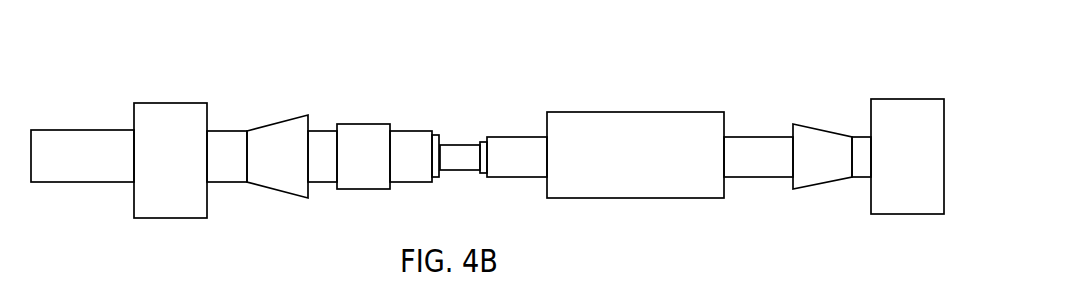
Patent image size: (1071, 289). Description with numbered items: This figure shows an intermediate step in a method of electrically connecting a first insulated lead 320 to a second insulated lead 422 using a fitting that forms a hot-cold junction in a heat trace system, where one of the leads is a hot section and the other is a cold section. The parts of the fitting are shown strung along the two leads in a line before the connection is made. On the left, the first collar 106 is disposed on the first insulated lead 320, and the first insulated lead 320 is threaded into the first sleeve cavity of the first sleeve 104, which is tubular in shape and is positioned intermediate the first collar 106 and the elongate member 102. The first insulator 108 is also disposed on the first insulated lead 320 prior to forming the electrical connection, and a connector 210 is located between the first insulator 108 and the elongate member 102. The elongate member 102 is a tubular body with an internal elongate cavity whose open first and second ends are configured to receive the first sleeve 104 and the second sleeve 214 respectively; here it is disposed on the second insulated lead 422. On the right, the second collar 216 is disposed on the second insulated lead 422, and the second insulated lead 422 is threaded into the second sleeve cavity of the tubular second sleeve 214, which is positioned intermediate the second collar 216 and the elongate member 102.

The first insulated lead 320 is at (78, 148).
The first collar 106 is at (175, 108).
The first sleeve 104 is at (288, 138).
The first insulator 108 is at (369, 138).
The connector 210 is at (465, 155).
The elongate member 102 is at (608, 137).
The second insulated lead 422 is at (762, 143).
The second sleeve 214 is at (820, 140).
The second collar 216 is at (906, 115).